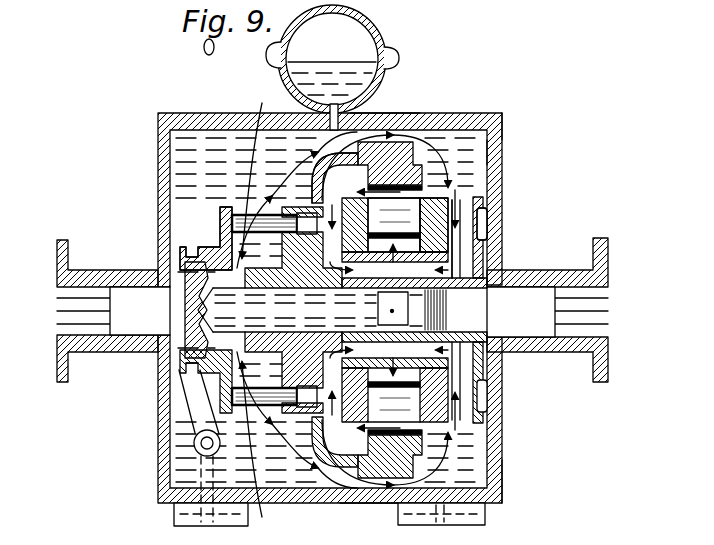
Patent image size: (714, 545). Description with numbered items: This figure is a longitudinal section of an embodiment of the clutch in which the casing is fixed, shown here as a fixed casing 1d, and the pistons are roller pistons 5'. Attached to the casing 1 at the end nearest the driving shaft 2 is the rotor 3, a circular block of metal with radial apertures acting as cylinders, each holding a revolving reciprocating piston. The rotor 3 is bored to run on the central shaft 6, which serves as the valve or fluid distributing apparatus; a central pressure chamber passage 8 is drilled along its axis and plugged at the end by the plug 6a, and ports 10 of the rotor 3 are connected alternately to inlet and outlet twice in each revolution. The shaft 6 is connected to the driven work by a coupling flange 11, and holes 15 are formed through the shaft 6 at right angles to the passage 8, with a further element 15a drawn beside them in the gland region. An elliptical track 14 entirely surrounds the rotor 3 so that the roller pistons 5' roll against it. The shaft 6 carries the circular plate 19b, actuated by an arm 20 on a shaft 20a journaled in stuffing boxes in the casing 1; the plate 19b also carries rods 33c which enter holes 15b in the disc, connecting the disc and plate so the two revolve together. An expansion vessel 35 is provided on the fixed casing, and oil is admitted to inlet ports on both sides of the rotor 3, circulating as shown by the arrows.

The casing 1 is at (368, 497).
The fixed casing 1d is at (450, 126).
The driving shaft 2 is at (537, 282).
The rotor 3 is at (443, 230).
The roller pistons 5' is at (456, 297).
The central shaft 6 is at (168, 302).
The plug 6a is at (447, 308).
The central pressure chamber passage 8 is at (372, 312).
The ports 10 is at (395, 113).
The coupling flange 11 is at (57, 258).
The elliptical track 14 is at (503, 152).
The holes 15 is at (192, 265).
The gland bracket 15a is at (188, 248).
The holes 15b is at (274, 310).
The circular plate 19b is at (193, 378).
The arm 20 is at (187, 412).
The shaft 20a is at (197, 448).
The rods 33c is at (243, 214).
The expansion vessel 35 is at (378, 36).